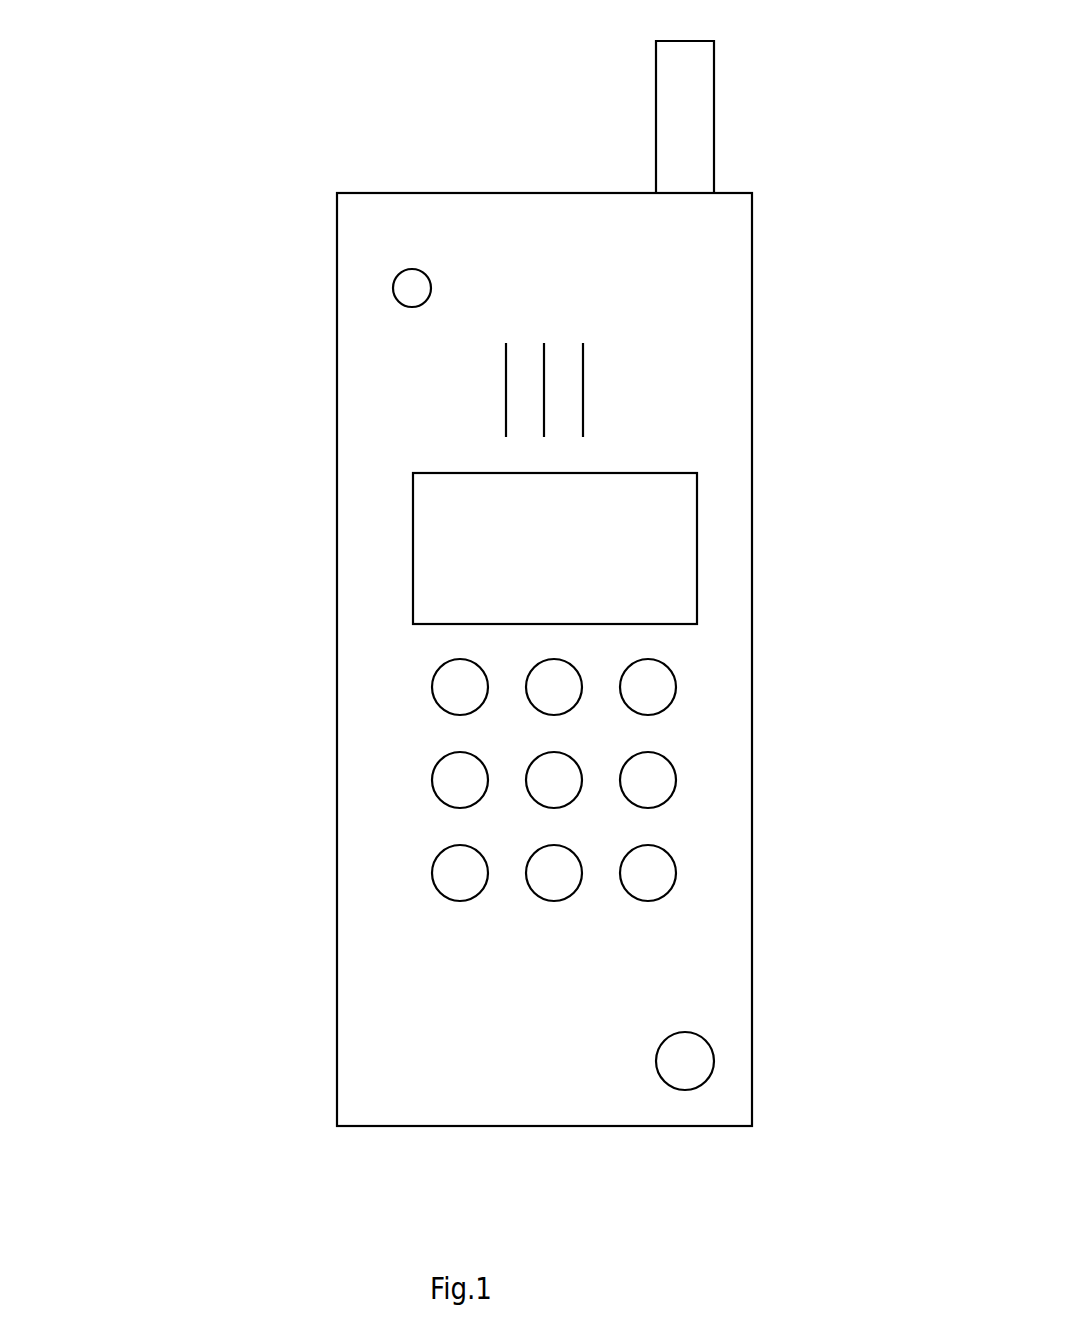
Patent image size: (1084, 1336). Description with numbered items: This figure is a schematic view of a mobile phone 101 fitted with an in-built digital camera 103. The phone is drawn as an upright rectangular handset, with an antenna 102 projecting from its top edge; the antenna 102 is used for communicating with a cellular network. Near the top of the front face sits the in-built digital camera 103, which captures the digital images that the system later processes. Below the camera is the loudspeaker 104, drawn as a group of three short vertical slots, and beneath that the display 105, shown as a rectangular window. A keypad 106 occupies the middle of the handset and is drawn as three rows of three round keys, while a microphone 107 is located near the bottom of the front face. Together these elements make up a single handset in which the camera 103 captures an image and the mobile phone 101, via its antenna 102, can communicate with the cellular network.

The mobile phone 101 is at (405, 659).
The antenna 102 is at (774, 96).
The in-built digital camera 103 is at (290, 171).
The loudspeaker 104 is at (721, 369).
The display 105 is at (675, 548).
The keypad 106 is at (672, 780).
The microphone 107 is at (792, 1027).